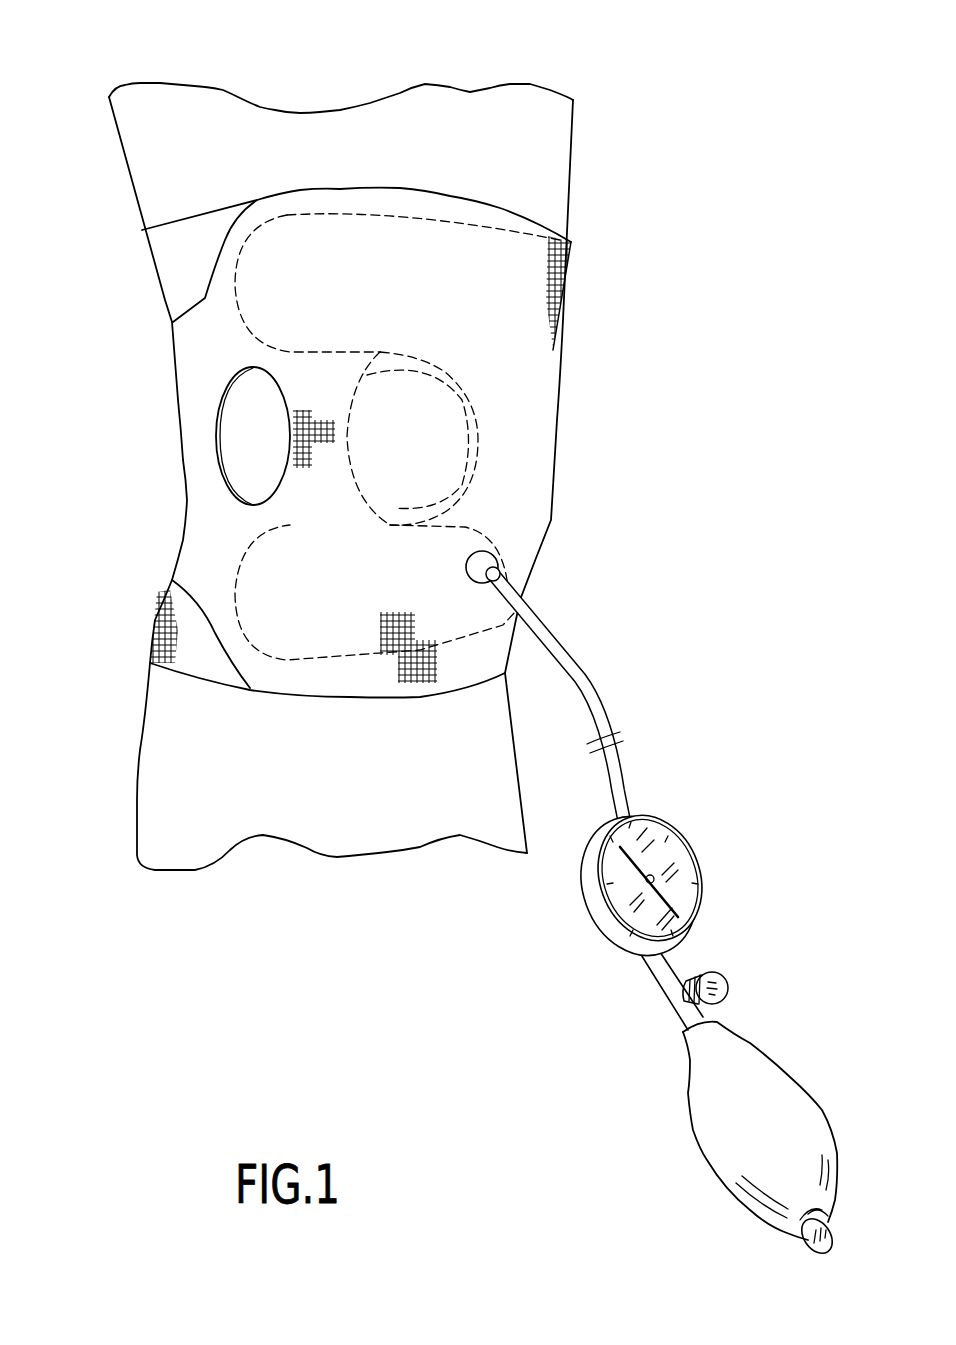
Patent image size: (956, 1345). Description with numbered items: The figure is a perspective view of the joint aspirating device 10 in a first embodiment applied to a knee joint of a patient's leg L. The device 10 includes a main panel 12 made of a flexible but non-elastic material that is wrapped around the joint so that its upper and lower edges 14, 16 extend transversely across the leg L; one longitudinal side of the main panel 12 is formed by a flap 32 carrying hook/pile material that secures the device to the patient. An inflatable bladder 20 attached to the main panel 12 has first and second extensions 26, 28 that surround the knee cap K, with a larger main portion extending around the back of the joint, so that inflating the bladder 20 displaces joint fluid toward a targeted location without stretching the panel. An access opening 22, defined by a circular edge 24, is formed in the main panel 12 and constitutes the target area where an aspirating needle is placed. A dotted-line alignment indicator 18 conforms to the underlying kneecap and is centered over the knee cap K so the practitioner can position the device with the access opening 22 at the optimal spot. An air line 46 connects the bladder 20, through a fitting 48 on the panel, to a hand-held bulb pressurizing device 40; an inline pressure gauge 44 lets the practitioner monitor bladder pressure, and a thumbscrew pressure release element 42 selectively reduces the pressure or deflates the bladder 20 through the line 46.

The aspirating device 10 is at (400, 412).
The main panel 12 is at (173, 270).
The upper edge 14 is at (347, 190).
The lower edge 16 is at (357, 697).
The alignment indicator 18 is at (380, 377).
The bladder 20 is at (493, 265).
The access opening 22 is at (230, 418).
The circular edge 24 is at (222, 453).
The first extension 26 is at (237, 287).
The second extension 28 is at (263, 643).
The flap 32 is at (190, 435).
The pressurizing device 40 is at (792, 1097).
The pressure release element 42 is at (717, 988).
The inline pressure gauge 44 is at (690, 853).
The air line 46 is at (620, 775).
The inflation port connector 48 is at (480, 557).
The leg L is at (480, 113).
The knee cap K is at (427, 430).